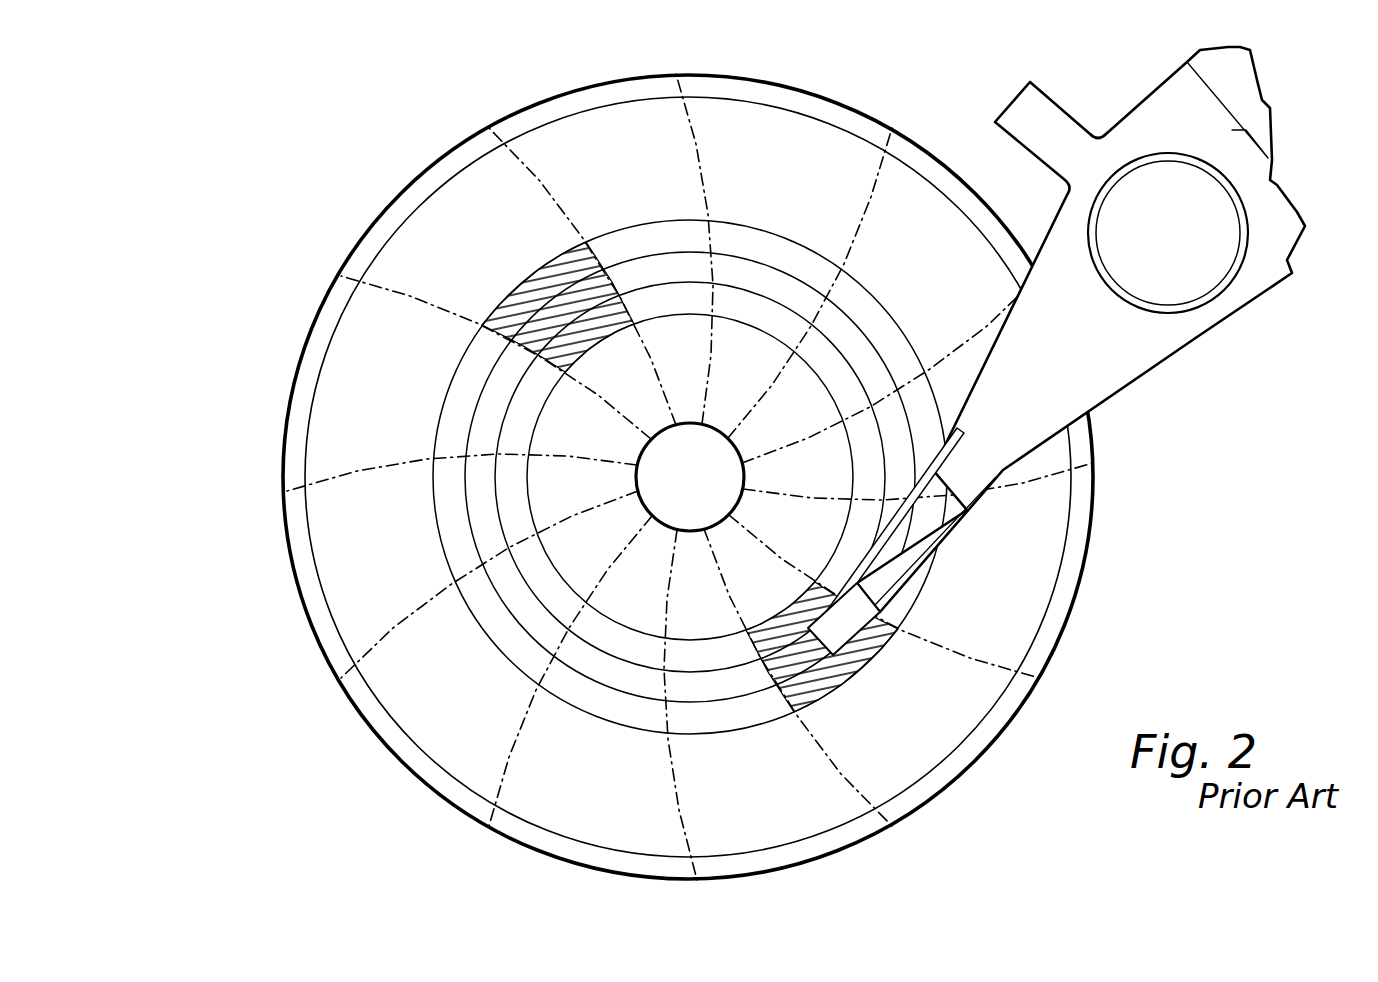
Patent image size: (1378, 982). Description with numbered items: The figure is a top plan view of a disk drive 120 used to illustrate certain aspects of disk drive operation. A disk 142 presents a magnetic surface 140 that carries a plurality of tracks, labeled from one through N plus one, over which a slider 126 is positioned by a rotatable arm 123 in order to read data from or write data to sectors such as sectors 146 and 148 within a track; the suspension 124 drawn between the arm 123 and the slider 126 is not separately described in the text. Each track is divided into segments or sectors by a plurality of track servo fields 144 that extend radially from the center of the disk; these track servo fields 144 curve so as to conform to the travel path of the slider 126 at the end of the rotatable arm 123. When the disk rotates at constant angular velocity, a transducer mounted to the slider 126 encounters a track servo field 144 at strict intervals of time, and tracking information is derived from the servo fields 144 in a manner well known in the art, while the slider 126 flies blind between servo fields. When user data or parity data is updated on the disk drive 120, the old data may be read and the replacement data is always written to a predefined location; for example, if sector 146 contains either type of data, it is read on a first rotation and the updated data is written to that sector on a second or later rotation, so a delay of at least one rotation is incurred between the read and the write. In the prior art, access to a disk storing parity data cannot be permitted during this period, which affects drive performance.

The disk drive 120 is at (240, 263).
The magnetic surface 140 is at (426, 183).
The disk 142 is at (348, 264).
The track servo fields 144 is at (487, 108).
The sector 148 is at (580, 292).
The sector 146 is at (748, 712).
The arm 123 is at (1008, 328).
The actuator arm suspension 124 is at (873, 575).
The slider 126 is at (870, 638).